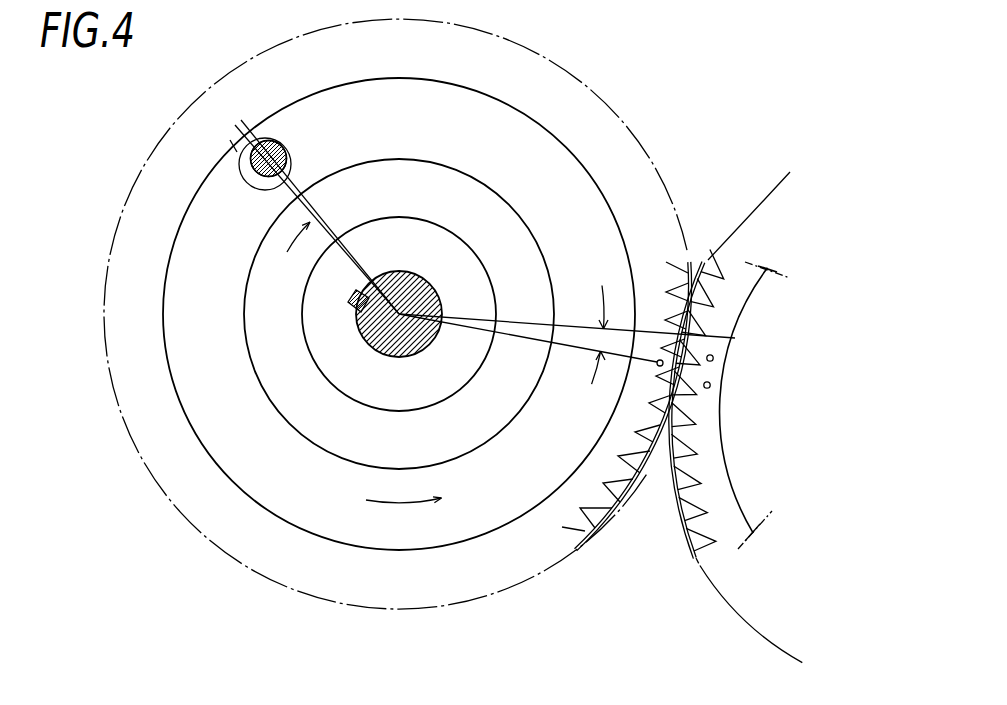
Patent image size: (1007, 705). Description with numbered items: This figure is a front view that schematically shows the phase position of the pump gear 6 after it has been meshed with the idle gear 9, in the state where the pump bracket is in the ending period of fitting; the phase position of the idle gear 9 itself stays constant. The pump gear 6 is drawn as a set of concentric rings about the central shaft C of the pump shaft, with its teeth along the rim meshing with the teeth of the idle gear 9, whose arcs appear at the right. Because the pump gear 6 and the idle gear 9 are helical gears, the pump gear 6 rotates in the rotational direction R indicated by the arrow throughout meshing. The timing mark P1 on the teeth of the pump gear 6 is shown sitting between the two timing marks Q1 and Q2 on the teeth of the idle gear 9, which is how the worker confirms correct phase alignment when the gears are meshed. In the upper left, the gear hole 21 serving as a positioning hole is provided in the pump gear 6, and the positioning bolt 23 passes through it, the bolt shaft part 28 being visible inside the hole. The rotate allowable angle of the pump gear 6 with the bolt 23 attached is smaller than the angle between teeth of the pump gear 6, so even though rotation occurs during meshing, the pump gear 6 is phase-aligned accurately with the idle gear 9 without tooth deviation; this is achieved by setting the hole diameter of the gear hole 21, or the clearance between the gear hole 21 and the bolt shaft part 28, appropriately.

The pump gear 6 is at (472, 513).
The idle gear 9 is at (728, 603).
The gear hole 21 is at (240, 170).
The positioning bolt 23 is at (286, 146).
The bolt shaft part 28 is at (269, 159).
The central shaft C is at (402, 312).
The rotational direction R is at (404, 517).
The timing mark P1 is at (655, 366).
The timing mark Q1 is at (716, 358).
The timing mark Q2 is at (712, 388).